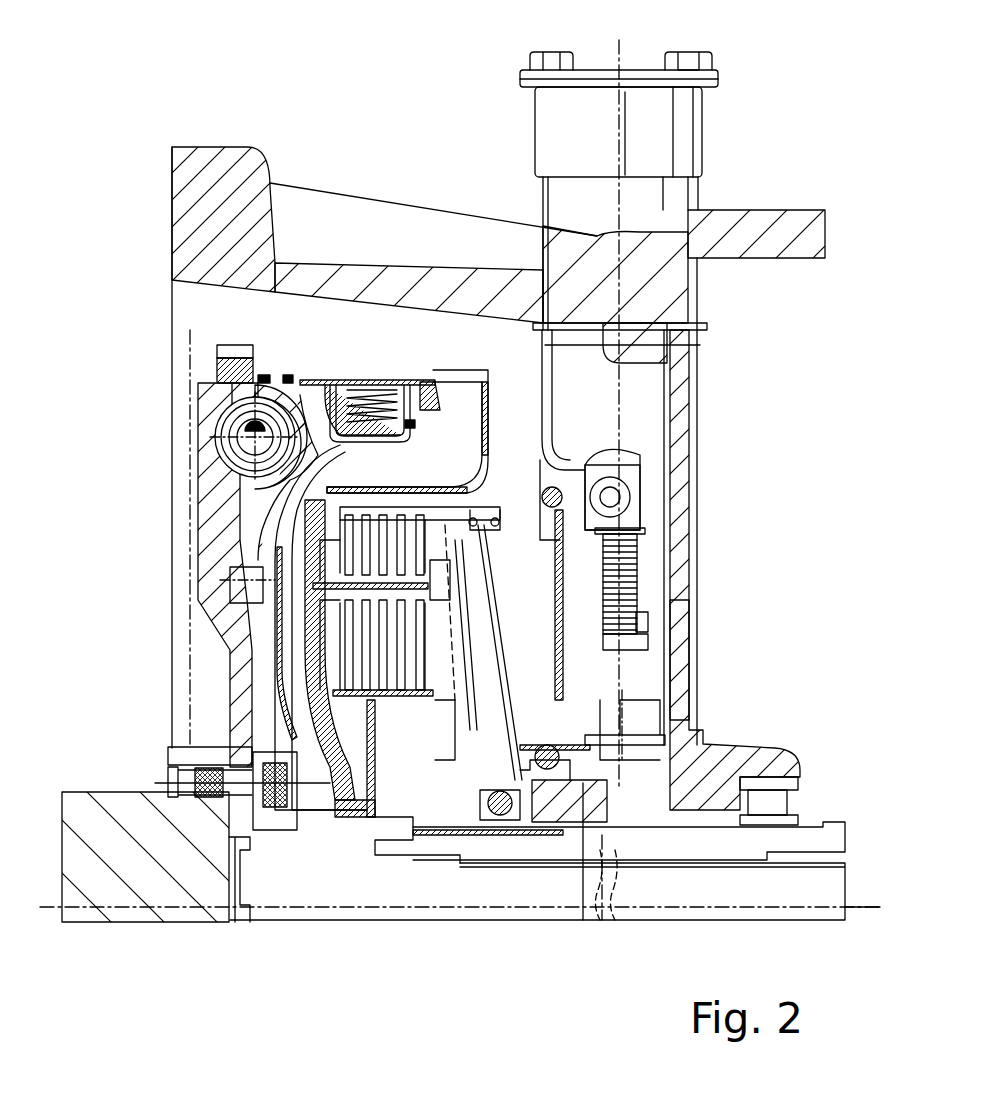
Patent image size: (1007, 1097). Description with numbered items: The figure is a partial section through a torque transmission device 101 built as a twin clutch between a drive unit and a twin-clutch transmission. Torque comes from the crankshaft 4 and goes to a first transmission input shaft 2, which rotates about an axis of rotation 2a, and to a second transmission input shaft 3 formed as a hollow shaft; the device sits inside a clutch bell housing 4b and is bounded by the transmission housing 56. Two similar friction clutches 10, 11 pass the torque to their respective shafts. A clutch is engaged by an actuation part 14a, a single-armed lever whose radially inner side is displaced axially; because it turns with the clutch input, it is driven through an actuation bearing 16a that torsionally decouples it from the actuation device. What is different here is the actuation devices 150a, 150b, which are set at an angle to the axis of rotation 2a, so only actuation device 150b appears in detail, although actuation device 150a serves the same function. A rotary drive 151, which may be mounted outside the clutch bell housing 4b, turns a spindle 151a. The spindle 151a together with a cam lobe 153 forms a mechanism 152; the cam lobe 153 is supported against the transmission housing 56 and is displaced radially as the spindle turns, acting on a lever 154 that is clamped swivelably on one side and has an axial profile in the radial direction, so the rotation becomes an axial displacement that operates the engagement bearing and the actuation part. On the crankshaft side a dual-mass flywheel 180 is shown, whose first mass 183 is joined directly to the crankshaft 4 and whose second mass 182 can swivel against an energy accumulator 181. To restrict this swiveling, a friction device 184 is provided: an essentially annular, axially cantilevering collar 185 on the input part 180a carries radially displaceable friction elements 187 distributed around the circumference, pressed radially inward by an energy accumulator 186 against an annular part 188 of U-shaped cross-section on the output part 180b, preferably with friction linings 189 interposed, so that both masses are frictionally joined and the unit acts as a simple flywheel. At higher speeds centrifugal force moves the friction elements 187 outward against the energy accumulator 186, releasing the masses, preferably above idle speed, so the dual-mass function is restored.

The first transmission input shaft 2 is at (729, 902).
The rotational axis 2a is at (862, 907).
The second transmission input shaft 3 is at (688, 856).
The crankshaft 4 is at (175, 845).
The clutch bell housing 4b is at (785, 250).
The friction clutch 10 is at (462, 498).
The friction clutch 11 is at (400, 700).
The actuation part 14a is at (500, 645).
The actuation bearing 16a is at (600, 760).
The transmission housing 56 is at (683, 557).
The torque transmission device 101 is at (757, 100).
The actuation device 150a is at (555, 832).
The actuation device 150b is at (692, 655).
The rotary drive 151 is at (645, 143).
The spindle 151a is at (632, 580).
The mechanism 152 is at (642, 620).
The cam lobe 153 is at (588, 497).
The lever 154 is at (635, 712).
The dual-mass flywheel 180 is at (297, 370).
The input part 180a is at (232, 655).
The output part 180b is at (265, 692).
The energy accumulator 181 is at (258, 375).
The second mass 182 is at (340, 475).
The first mass 183 is at (188, 437).
The friction device 184 is at (408, 365).
The collar 185 is at (322, 370).
The energy accumulator 186 is at (397, 385).
The friction elements 187 is at (452, 378).
The annular part 188 is at (410, 424).
The friction linings 189 is at (480, 395).